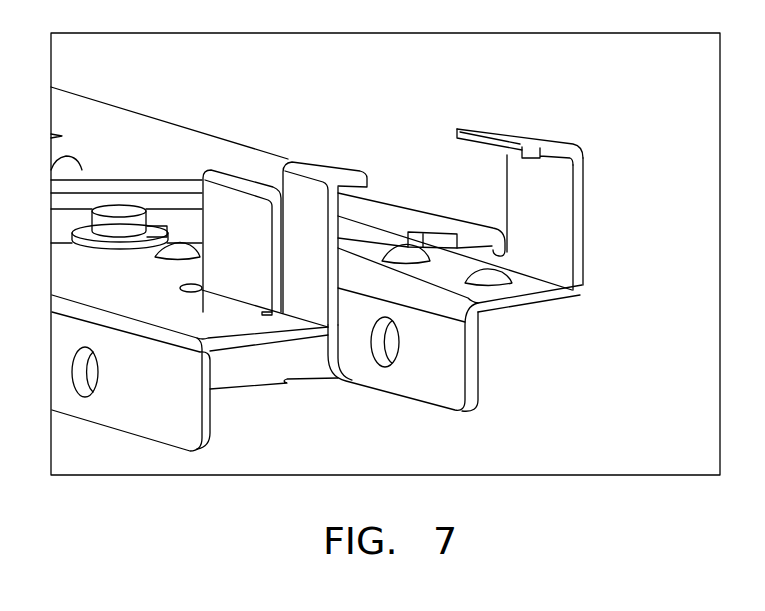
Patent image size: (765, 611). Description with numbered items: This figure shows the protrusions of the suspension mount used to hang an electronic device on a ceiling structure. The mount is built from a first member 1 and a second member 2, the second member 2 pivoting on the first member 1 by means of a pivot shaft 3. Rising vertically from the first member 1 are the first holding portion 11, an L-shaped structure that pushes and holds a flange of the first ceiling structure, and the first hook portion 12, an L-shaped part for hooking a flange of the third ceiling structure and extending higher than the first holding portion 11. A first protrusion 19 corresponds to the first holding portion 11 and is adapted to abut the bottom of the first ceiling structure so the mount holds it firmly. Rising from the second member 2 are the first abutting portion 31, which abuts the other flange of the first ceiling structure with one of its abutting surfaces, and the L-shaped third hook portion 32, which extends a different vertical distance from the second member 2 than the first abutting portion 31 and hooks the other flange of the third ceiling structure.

The first member 1 is at (527, 288).
The second member 2 is at (208, 315).
The pivot shaft 3 is at (119, 207).
The first holding portion 11 is at (392, 213).
The first hook portion 12 is at (518, 134).
The first protrusion 19 is at (412, 247).
The first abutting portion 31 is at (243, 172).
The third hook portion 32 is at (323, 163).